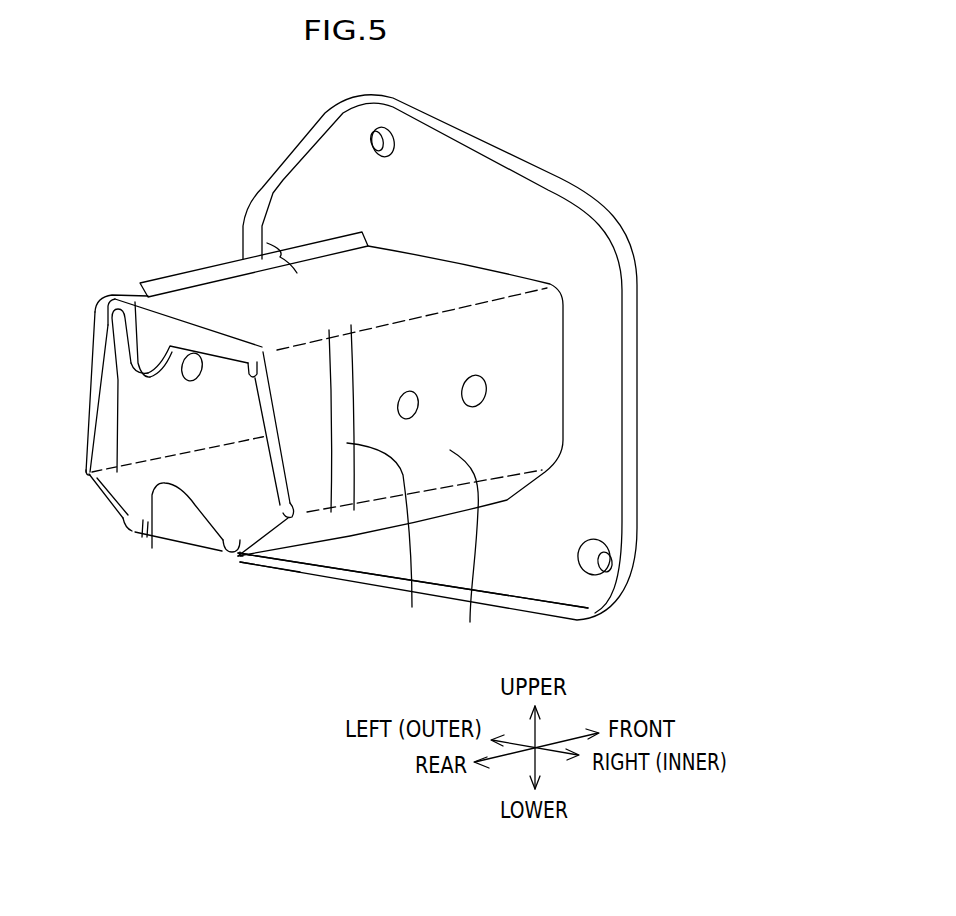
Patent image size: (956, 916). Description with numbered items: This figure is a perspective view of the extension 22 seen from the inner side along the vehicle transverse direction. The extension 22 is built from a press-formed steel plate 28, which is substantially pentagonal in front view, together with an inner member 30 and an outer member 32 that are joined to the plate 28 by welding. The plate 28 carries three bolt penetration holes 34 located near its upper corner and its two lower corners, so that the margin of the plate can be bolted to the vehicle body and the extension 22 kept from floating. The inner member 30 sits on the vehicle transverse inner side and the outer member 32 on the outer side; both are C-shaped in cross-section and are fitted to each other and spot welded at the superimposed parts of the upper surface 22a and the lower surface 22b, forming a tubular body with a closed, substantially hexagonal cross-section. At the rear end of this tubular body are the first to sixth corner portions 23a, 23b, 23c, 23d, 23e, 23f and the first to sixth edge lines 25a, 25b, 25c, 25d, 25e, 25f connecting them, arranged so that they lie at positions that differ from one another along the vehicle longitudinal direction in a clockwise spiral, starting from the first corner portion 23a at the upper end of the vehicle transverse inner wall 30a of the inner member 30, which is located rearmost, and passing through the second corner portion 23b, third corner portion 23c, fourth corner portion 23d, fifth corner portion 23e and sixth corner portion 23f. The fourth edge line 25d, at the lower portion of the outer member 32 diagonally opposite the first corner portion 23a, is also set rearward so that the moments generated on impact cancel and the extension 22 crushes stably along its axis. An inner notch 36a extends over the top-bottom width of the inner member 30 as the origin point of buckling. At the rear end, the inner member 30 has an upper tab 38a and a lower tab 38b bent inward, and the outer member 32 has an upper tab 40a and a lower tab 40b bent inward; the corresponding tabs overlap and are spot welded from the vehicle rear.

The extension 22 is at (545, 125).
The upper surface 22a is at (243, 245).
The lower surface 22b is at (210, 557).
The first corner portion 23a is at (266, 350).
The second corner portion 23b is at (296, 558).
The third corner portion 23c is at (238, 556).
The fourth corner portion 23d is at (131, 533).
The fifth corner portion 23e is at (87, 472).
The sixth corner portion 23f is at (105, 298).
The first edge line 25a is at (265, 443).
The second edge line 25b is at (258, 540).
The third edge line 25c is at (178, 547).
The fourth edge line 25d is at (100, 493).
The fifth edge line 25e is at (90, 403).
The sixth edge line 25f is at (181, 331).
The plate 28 is at (658, 325).
The inner member 30 is at (372, 545).
The vehicle transverse inner wall 30a is at (476, 547).
The outer member 32 is at (78, 440).
The bolt penetration hole 34 is at (373, 153).
The inner notch 36a is at (412, 463).
The upper tab 38a is at (150, 362).
The lower tab 38b is at (182, 517).
The upper tab 40a is at (110, 318).
The lower tab 40b is at (140, 538).